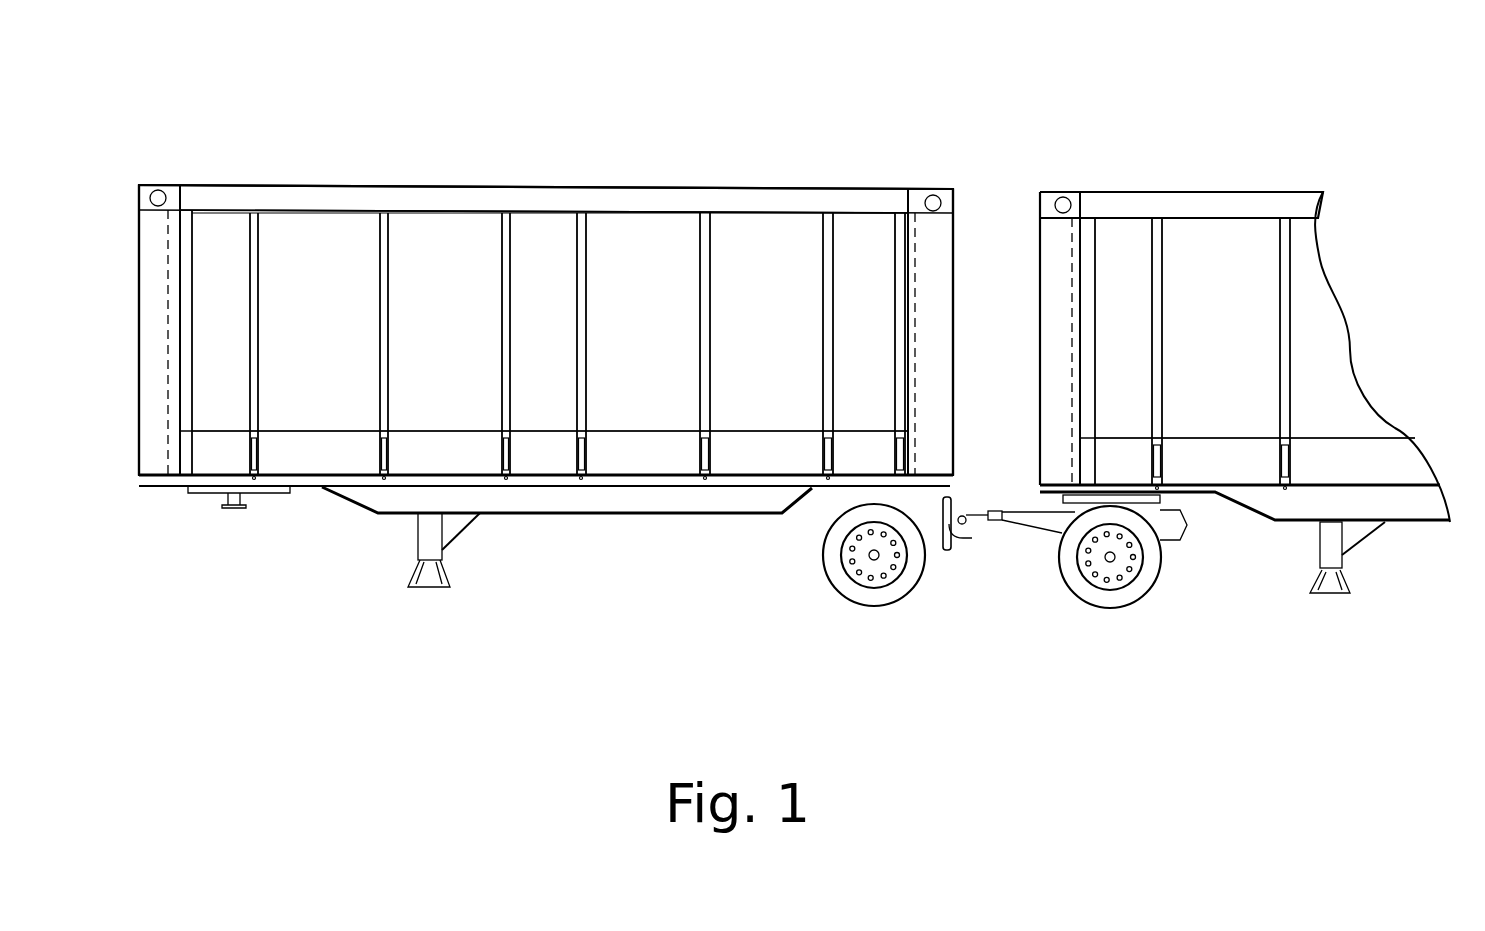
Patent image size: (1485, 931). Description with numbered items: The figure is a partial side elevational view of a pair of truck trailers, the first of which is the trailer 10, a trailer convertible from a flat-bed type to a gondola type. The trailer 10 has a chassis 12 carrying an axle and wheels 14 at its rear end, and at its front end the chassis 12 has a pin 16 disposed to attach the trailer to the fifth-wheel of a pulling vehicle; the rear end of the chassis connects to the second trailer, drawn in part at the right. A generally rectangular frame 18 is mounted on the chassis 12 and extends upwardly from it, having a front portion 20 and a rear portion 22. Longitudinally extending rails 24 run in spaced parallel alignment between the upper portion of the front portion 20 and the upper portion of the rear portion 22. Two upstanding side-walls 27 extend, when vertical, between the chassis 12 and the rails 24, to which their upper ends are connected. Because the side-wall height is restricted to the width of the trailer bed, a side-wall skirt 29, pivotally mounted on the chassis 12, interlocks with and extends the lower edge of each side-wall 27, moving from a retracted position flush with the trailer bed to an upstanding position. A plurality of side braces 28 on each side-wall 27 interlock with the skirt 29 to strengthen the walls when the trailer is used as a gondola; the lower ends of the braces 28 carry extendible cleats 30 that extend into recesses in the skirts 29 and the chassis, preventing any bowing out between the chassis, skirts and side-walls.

The truck trailer 10 is at (582, 188).
The chassis 12 is at (405, 500).
The wheels 14 is at (884, 557).
The pin 16 is at (233, 508).
The frame 18 is at (808, 200).
The front portion 20 is at (150, 272).
The rear portion 22 is at (938, 272).
The longitudinally extending rails 24 is at (293, 200).
The side-wall 27 is at (450, 398).
The side braces 28 is at (255, 300).
The side-wall skirt 29 is at (323, 462).
The extendible cleats 30 is at (590, 452).